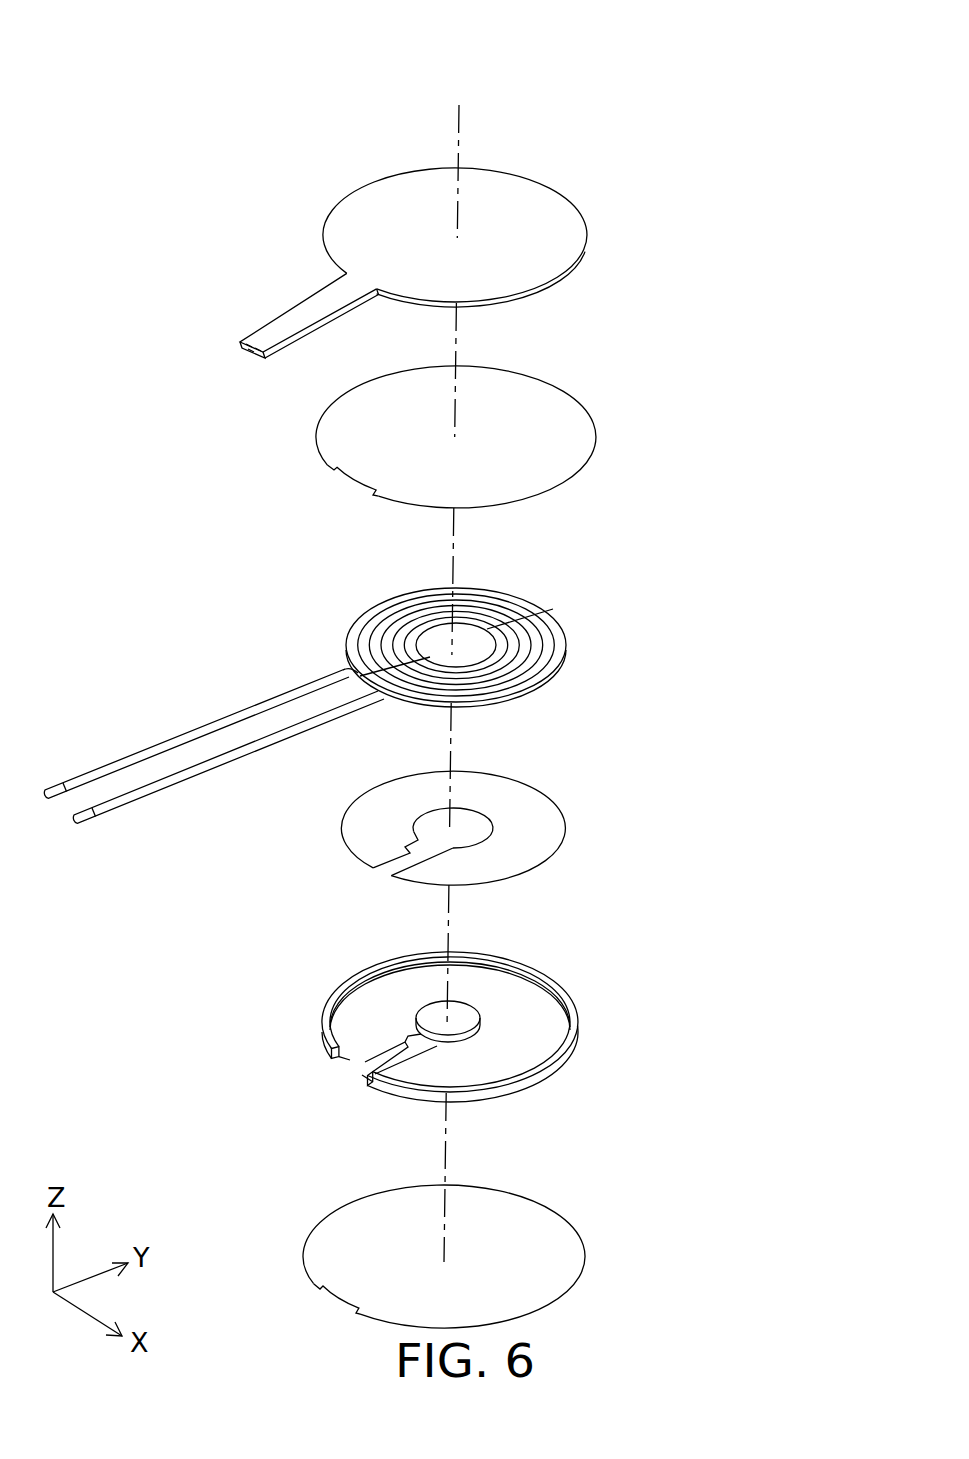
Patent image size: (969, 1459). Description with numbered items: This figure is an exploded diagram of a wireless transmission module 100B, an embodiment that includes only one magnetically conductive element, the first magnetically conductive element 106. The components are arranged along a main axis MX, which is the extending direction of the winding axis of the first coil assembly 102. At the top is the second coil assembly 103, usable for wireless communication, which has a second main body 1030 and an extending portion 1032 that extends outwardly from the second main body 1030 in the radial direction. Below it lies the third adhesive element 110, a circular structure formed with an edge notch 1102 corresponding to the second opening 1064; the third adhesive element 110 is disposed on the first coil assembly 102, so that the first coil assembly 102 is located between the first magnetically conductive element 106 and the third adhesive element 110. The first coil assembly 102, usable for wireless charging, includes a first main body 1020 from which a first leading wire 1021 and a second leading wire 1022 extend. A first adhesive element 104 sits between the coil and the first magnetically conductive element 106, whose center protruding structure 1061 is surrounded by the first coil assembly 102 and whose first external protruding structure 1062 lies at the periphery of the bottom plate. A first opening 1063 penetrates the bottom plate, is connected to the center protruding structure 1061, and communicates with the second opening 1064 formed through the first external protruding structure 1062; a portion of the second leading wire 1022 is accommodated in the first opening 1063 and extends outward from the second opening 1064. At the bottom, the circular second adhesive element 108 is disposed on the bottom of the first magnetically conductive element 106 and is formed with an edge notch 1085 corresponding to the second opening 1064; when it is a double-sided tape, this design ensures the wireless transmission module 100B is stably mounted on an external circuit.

The wireless transmission module 100B is at (148, 34).
The main axis MX is at (459, 666).
The second coil assembly 103 is at (626, 218).
The second main body 1030 is at (376, 197).
The extending portion 1032 is at (300, 318).
The third adhesive element 110 is at (626, 432).
The edge notch 1102 is at (345, 484).
The first coil assembly 102 is at (594, 646).
The first main body 1020 is at (545, 613).
The first leading wire 1021 is at (182, 740).
The second leading wire 1022 is at (140, 797).
The first adhesive element 104 is at (594, 826).
The first magnetically conductive element 106 is at (613, 1020).
The center protruding structure 1061 is at (462, 1004).
The first external protruding structure 1062 is at (549, 1069).
The first opening 1063 is at (391, 1057).
The second opening 1064 is at (345, 1073).
The second adhesive element 108 is at (613, 1256).
The edge notch 1085 is at (340, 1299).